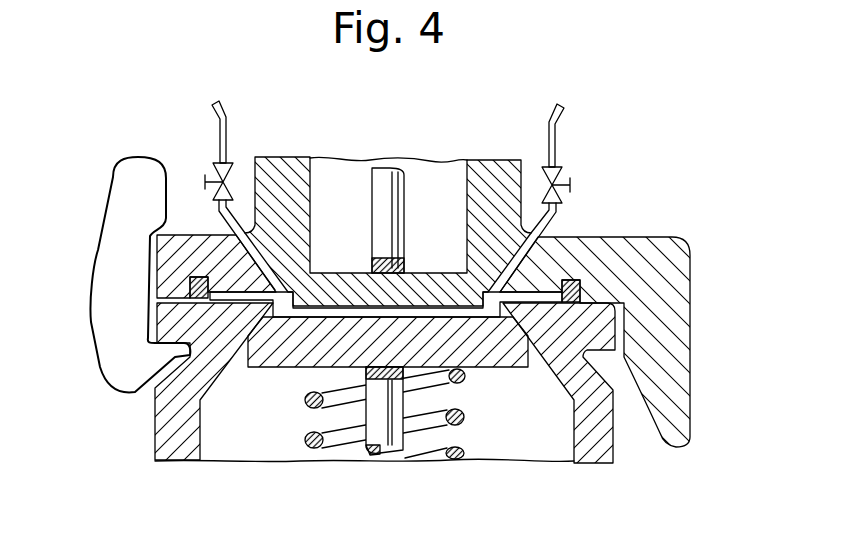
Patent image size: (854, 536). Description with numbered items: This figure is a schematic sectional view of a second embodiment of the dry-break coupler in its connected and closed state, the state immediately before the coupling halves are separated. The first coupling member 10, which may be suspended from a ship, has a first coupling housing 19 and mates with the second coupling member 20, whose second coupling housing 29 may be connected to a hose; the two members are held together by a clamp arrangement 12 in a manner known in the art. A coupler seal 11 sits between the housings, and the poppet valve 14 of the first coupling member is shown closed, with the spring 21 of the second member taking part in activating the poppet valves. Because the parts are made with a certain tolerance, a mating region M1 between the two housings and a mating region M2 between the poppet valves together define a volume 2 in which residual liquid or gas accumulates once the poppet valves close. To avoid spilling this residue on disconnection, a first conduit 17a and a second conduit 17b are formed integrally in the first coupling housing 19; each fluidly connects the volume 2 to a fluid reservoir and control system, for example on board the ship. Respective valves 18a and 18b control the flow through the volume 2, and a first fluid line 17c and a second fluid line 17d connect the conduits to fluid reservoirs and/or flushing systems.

The volume 2 is at (272, 296).
The first coupling member 10 is at (297, 154).
The coupler seal 11 is at (535, 291).
The clamp arrangement 12 is at (92, 245).
The poppet valve 14 is at (436, 273).
The first conduit 17a is at (250, 250).
The second conduit 17b is at (522, 258).
The first fluid line 17c is at (226, 135).
The second fluid line 17d is at (548, 127).
The valve 18a is at (215, 168).
The valve 18b is at (560, 168).
The first coupling housing 19 is at (610, 237).
The second coupling member 20 is at (622, 455).
The spring 21 is at (463, 417).
The second coupling housing 29 is at (177, 421).
The mating region of the coupling housings M1 is at (237, 293).
The mating region of the poppet valves M2 is at (360, 315).